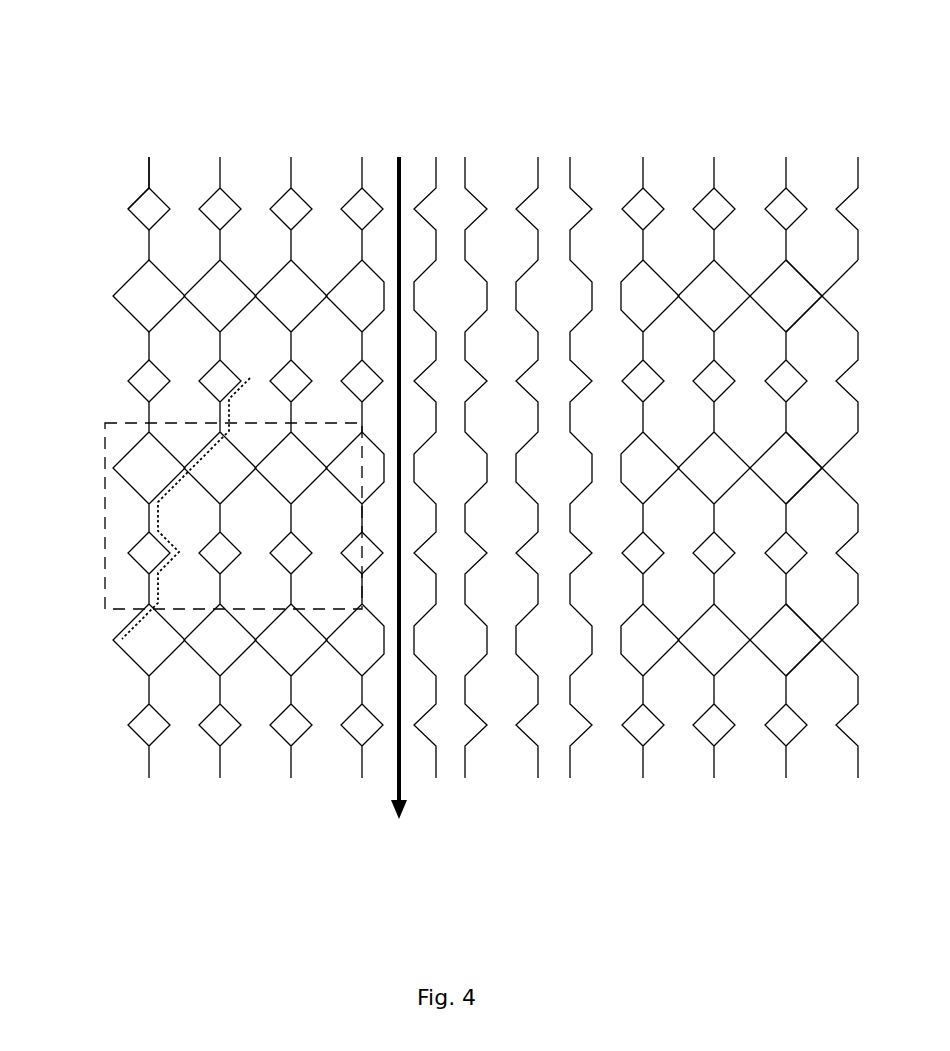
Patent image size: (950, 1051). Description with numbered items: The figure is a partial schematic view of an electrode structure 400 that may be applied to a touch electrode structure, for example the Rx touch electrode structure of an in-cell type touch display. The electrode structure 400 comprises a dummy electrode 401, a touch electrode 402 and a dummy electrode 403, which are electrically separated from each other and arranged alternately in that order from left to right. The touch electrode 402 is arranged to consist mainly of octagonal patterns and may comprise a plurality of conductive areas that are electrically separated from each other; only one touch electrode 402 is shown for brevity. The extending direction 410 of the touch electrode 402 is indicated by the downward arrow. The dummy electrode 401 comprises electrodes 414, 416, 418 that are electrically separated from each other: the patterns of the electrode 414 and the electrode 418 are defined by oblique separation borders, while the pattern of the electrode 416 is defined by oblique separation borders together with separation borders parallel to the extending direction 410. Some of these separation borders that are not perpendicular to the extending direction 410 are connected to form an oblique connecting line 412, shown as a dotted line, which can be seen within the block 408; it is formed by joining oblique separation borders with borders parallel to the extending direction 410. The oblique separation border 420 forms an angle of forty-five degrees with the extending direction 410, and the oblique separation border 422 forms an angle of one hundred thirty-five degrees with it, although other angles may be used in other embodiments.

The electrode structure 400 is at (206, 60).
The dummy electrode 401 is at (358, 100).
The touch electrode 402 is at (637, 80).
The dummy electrode 403 is at (872, 80).
The block 408 is at (118, 512).
The extending direction 410 is at (406, 509).
The oblique connecting line 412 is at (120, 637).
The electrode 414 is at (142, 287).
The electrode 416 is at (182, 347).
The electrode 418 is at (157, 373).
The oblique separation border 420 is at (138, 200).
The oblique separation border 422 is at (143, 223).